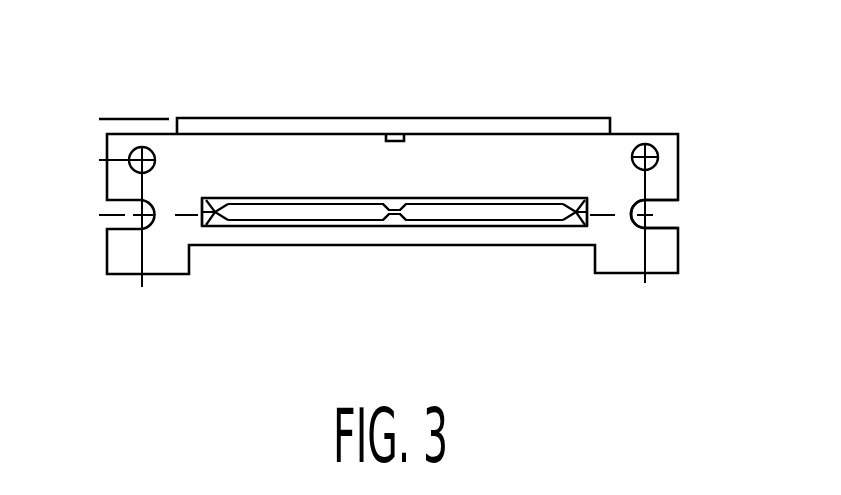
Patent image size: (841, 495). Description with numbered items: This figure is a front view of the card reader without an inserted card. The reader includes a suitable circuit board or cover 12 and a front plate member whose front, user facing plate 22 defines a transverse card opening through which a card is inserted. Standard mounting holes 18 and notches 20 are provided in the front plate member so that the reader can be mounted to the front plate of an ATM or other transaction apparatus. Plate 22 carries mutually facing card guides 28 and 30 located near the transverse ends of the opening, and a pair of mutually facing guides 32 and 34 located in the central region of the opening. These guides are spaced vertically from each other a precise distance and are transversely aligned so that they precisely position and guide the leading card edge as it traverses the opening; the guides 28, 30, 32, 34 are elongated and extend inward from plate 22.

The circuit board or cover 12 is at (587, 126).
The mounting holes 18 is at (655, 150).
The notches 20 is at (668, 212).
The front user facing plate 22 is at (252, 150).
The card guide 28 is at (215, 223).
The card guide 30 is at (218, 200).
The card guide 32 is at (398, 222).
The card guide 34 is at (393, 202).